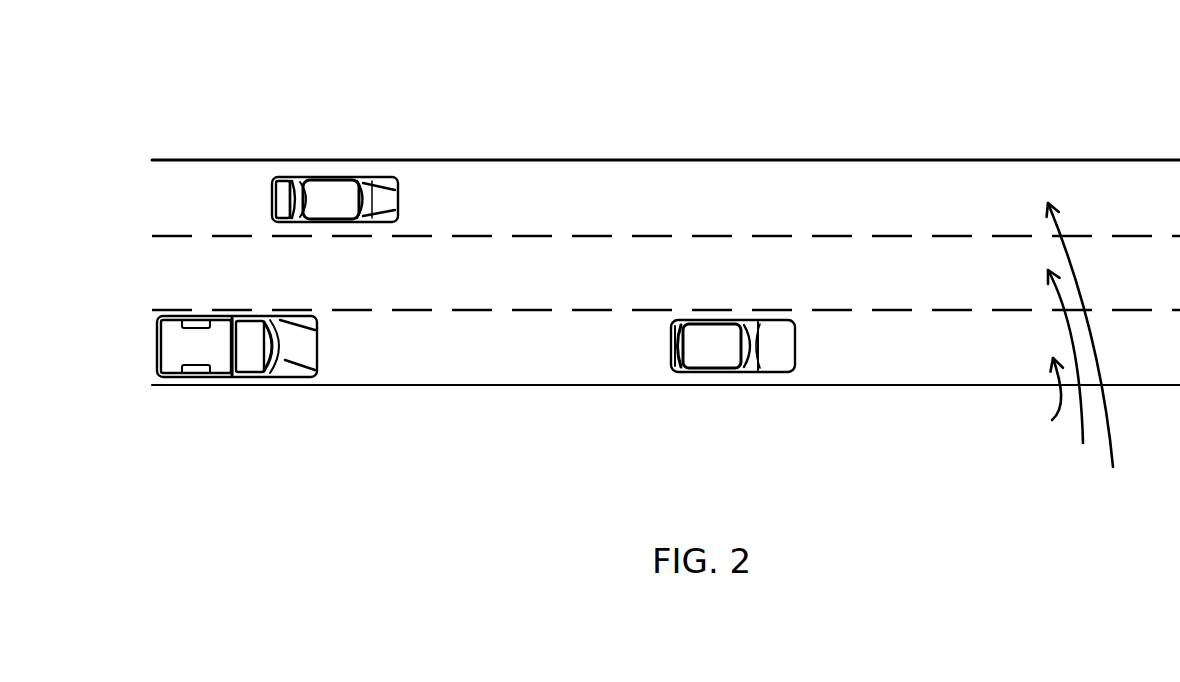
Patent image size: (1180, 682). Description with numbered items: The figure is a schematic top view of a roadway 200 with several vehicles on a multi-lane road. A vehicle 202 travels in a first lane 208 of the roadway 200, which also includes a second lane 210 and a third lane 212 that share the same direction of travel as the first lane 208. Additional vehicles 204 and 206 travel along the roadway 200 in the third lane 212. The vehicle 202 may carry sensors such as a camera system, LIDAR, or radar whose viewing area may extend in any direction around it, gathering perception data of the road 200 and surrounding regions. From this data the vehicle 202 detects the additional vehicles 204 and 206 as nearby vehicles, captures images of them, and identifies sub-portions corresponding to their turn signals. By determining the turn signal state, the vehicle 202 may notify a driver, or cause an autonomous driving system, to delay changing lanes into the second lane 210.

The roadway 200 is at (722, 92).
The vehicle 202 is at (347, 178).
The additional vehicle 204 is at (785, 360).
The additional vehicle 206 is at (295, 360).
The first lane 208 is at (1092, 350).
The second lane 210 is at (1071, 371).
The third lane 212 is at (1035, 400).